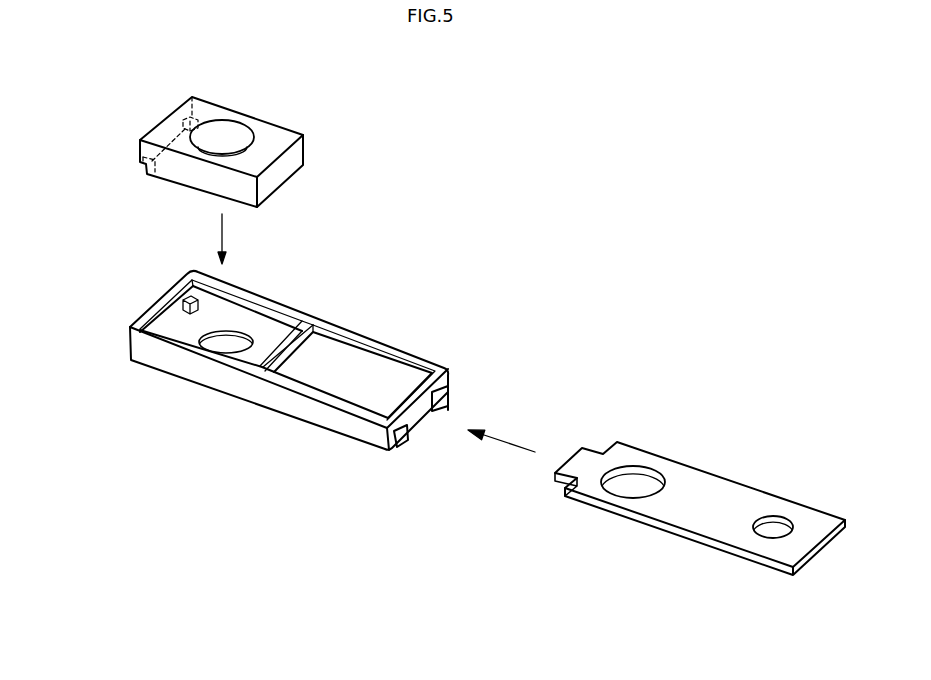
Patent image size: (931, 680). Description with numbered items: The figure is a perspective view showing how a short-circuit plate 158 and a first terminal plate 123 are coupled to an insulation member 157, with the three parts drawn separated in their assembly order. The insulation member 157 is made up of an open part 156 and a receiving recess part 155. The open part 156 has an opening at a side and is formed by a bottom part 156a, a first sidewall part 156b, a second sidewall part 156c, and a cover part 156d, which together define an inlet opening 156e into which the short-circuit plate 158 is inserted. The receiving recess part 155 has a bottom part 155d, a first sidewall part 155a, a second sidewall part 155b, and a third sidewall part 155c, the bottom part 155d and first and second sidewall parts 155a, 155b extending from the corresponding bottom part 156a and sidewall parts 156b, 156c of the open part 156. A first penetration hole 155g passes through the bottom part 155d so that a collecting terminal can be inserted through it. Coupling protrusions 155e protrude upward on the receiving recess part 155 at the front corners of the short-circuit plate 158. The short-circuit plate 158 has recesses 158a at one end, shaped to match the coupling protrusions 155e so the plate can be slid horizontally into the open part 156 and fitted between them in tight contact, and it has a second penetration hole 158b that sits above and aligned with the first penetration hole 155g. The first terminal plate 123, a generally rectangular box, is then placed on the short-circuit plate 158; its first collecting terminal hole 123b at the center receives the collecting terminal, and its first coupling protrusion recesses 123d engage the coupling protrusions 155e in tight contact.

The first terminal plate 123 is at (201, 128).
The first collecting terminal hole 123b is at (223, 128).
The first coupling protrusion recesses 123d is at (184, 120).
The receiving recess part 155 is at (206, 383).
The first sidewall part 155a is at (183, 341).
The second sidewall part 155b is at (223, 281).
The third sidewall part 155c is at (146, 309).
The bottom part 155d is at (278, 398).
The coupling protrusions 155e is at (153, 327).
The first penetration hole 155g is at (231, 346).
The open part 156 is at (414, 329).
The bottom part 156a is at (500, 382).
The first sidewall part 156b is at (312, 392).
The second sidewall part 156c is at (378, 343).
The cover part 156d is at (392, 372).
The inlet opening 156e is at (447, 375).
The insulation member 157 is at (138, 279).
The short-circuit plate 158 is at (698, 478).
The recesses 158a is at (552, 475).
The second penetration hole 158b is at (638, 478).